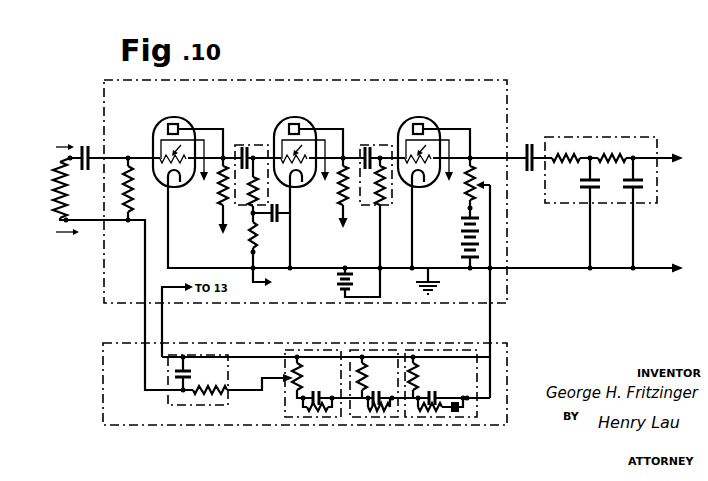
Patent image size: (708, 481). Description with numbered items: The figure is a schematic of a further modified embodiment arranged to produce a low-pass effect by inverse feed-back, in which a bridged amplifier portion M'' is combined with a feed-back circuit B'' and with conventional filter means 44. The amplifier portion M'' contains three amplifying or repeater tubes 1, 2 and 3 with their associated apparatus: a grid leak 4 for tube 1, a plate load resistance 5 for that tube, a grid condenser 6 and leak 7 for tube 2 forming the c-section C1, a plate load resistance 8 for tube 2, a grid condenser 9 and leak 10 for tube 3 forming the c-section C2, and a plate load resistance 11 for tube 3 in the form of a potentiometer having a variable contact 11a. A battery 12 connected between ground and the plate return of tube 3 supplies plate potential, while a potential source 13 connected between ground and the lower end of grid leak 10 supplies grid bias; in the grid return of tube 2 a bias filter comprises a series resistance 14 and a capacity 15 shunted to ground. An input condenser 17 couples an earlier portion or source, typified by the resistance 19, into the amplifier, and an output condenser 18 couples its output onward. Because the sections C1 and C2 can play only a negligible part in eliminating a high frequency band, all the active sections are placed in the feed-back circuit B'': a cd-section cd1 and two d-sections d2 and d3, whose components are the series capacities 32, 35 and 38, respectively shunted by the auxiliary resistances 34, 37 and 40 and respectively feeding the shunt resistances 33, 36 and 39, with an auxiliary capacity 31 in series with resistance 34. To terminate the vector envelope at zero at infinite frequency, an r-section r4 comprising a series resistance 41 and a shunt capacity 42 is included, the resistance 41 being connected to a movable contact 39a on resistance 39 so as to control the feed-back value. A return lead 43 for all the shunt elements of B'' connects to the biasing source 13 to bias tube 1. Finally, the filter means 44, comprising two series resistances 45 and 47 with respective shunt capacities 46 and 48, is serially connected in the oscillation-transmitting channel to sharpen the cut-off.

The amplifying tube 1 is at (170, 115).
The amplifying tube 2 is at (304, 118).
The amplifying tube 3 is at (421, 116).
The grid leak 4 is at (132, 176).
The plate load resistance 5 is at (216, 206).
The grid condenser 6 is at (245, 150).
The grid leak 7 is at (248, 197).
The plate load resistance 8 is at (338, 210).
The grid condenser 9 is at (364, 150).
The grid leak 10 is at (377, 198).
The plate load resistance 11 is at (463, 194).
The variable contact 11a is at (489, 282).
The battery 12 is at (462, 232).
The potential source 13 is at (337, 282).
The series resistance 14 is at (248, 238).
The capacity 15 is at (272, 224).
The input condenser 17 is at (80, 144).
The output condenser 18 is at (528, 143).
The resistance 19 is at (53, 166).
The auxiliary capacity 31 is at (455, 402).
The series capacity 32 is at (436, 392).
The shunt resistance 33 is at (416, 372).
The auxiliary resistance 34 is at (433, 413).
The series capacity 35 is at (379, 392).
The shunt resistance 36 is at (364, 372).
The auxiliary resistance 37 is at (383, 413).
The series capacity 38 is at (318, 392).
The shunt resistance 39 is at (300, 372).
The movable contact 39a is at (290, 381).
The auxiliary resistance 40 is at (306, 412).
The series resistance 41 is at (238, 384).
The shunt capacity 42 is at (188, 370).
The return lead 43 is at (272, 357).
The filter means 44 is at (657, 138).
The series resistance 45 is at (558, 155).
The shunt capacity 46 is at (584, 188).
The series resistance 47 is at (610, 155).
The shunt capacity 48 is at (637, 189).
The c-section C1 is at (240, 147).
The c-section C2 is at (385, 146).
The amplifier portion M'' is at (321, 180).
The feed-back circuit B'' is at (318, 375).
The r-section r4 is at (201, 408).
The d-section d3 is at (320, 416).
The d-section d2 is at (360, 416).
The cd-section cd1 is at (478, 418).